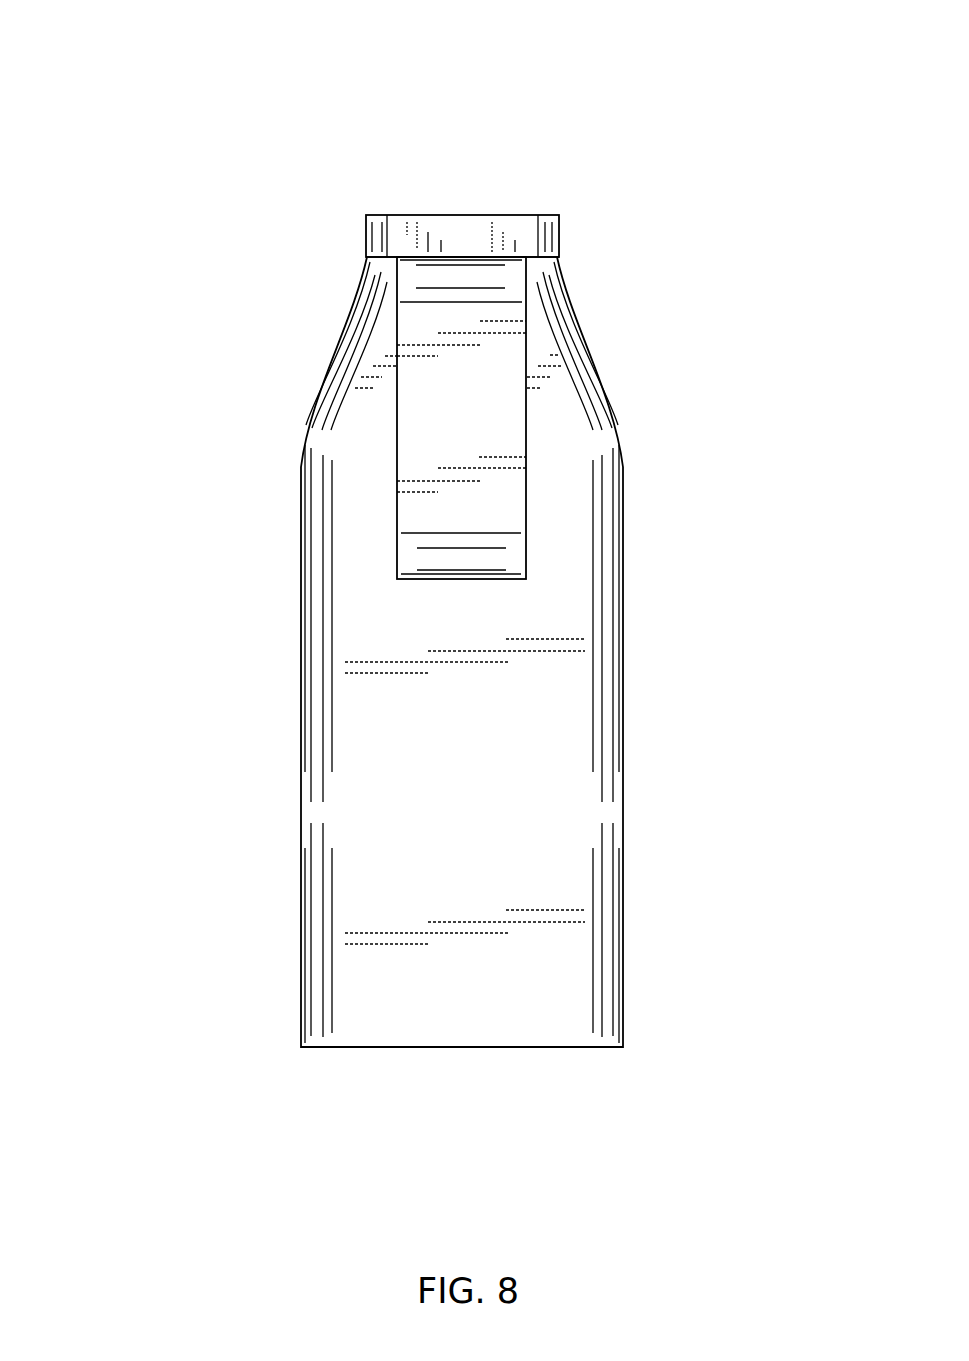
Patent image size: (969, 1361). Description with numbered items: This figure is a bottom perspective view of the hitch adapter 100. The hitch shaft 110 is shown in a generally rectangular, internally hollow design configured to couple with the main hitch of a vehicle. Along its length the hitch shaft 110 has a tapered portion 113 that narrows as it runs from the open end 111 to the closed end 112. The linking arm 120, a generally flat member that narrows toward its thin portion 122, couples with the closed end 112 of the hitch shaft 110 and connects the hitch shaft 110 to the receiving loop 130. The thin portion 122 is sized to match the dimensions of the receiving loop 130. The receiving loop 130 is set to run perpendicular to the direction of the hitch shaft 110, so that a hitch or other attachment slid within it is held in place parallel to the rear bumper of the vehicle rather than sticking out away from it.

The hitch adapter 100 is at (180, 164).
The hitch shaft 110 is at (282, 853).
The open end 111 is at (523, 1048).
The closed end 112 is at (560, 258).
The tapered portion 113 is at (603, 377).
The linking arm 120 is at (447, 202).
The thin portion 122 is at (472, 236).
The receiving loop 130 is at (355, 399).